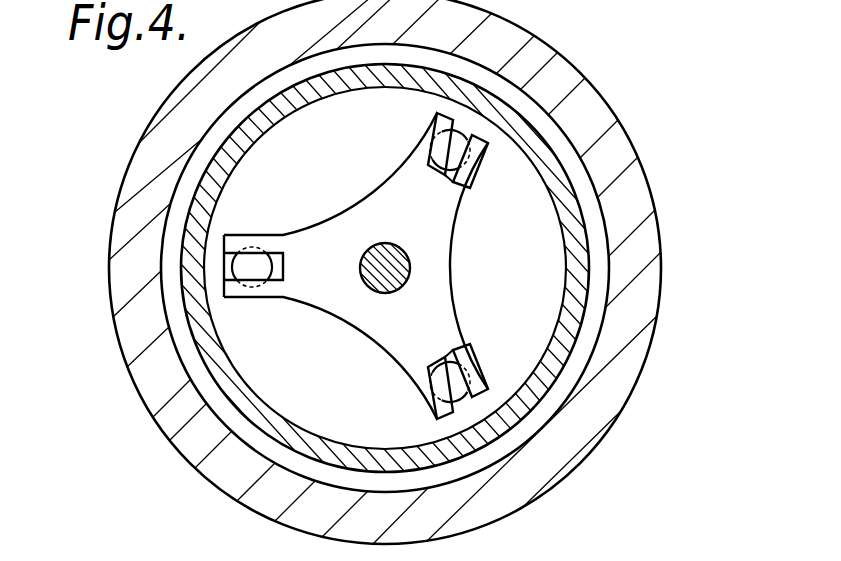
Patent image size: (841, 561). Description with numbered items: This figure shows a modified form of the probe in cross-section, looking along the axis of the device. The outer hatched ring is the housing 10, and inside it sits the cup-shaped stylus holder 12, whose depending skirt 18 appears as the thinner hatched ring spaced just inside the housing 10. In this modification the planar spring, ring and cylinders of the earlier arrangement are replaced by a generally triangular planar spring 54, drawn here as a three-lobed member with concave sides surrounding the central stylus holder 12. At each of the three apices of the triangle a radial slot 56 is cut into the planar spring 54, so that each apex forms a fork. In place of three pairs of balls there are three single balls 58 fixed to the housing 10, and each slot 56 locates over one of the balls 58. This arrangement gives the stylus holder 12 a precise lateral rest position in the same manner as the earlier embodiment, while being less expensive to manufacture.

The housing 10 is at (642, 258).
The stylus holder 12 is at (410, 268).
The skirt 18 is at (567, 362).
The triangular planar spring 54 is at (312, 227).
The radial slot 56 is at (470, 188).
The ball 58 is at (462, 131).